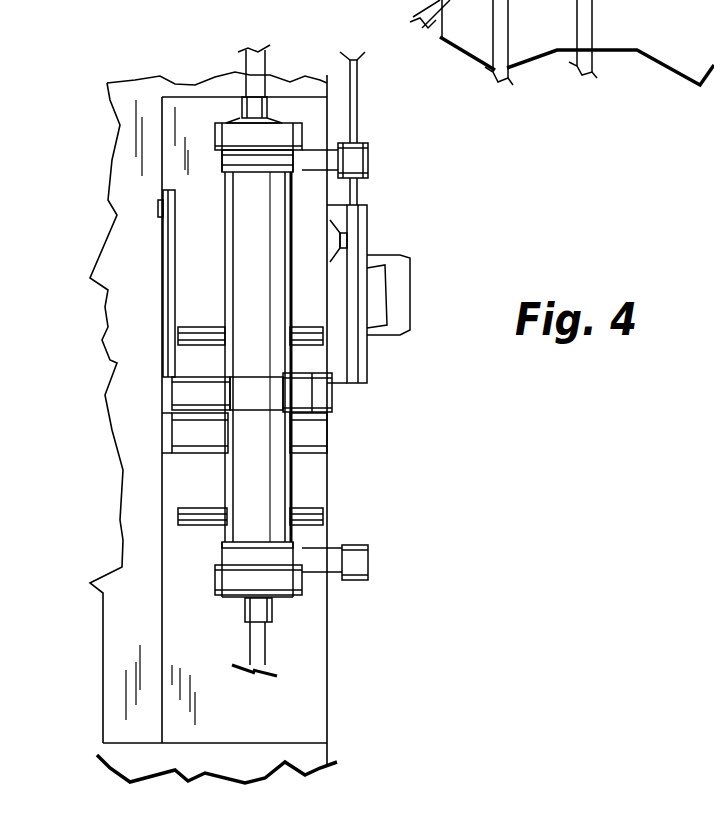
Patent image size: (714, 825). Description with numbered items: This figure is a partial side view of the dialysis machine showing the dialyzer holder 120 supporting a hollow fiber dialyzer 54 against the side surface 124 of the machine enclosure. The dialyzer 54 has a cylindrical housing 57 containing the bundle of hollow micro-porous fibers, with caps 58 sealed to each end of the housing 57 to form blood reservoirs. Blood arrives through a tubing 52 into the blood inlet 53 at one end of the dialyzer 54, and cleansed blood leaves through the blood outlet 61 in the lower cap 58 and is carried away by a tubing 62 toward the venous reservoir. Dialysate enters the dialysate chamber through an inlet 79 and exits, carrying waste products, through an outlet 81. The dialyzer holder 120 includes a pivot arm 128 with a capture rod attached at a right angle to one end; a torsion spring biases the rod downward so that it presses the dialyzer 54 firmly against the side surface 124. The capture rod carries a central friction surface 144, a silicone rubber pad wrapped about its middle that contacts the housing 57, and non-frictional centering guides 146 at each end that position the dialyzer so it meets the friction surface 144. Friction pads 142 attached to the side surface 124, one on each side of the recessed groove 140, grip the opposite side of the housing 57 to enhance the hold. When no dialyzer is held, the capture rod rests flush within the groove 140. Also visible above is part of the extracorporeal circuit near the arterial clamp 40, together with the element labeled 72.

The tubing 52 is at (255, 58).
The blood inlet 53 is at (245, 108).
The caps 58 is at (303, 130).
The outlet 81 is at (356, 162).
The hollow fiber dialyzer 54 is at (300, 213).
The pivot arm 128 is at (163, 245).
The friction pads 142 is at (187, 327).
The centering guides 146 is at (190, 383).
The dialyzer holder 120 is at (132, 400).
The recessed groove 140 is at (315, 439).
The central friction surface 144 is at (253, 397).
The cylindrical housing 57 is at (297, 497).
The inlet 79 is at (366, 560).
The blood outlet 61 is at (250, 612).
The tubing 62 is at (262, 677).
The side surface 124 is at (272, 727).
The post 72 is at (541, 42).
The arterial clamp 40 is at (562, 42).